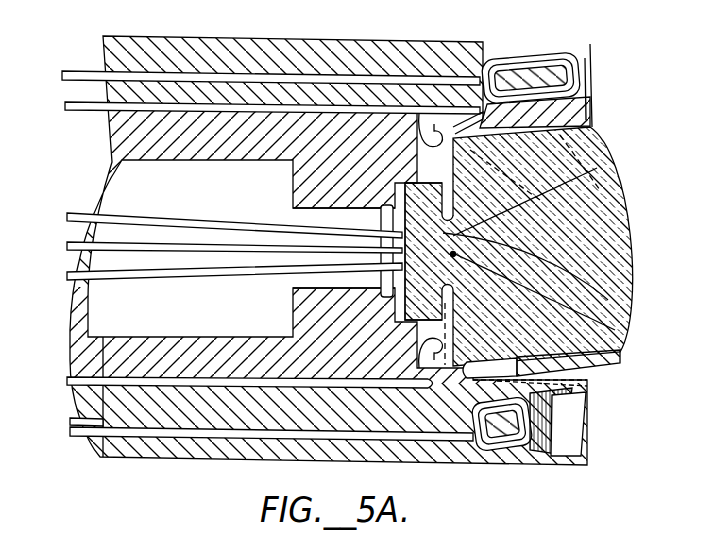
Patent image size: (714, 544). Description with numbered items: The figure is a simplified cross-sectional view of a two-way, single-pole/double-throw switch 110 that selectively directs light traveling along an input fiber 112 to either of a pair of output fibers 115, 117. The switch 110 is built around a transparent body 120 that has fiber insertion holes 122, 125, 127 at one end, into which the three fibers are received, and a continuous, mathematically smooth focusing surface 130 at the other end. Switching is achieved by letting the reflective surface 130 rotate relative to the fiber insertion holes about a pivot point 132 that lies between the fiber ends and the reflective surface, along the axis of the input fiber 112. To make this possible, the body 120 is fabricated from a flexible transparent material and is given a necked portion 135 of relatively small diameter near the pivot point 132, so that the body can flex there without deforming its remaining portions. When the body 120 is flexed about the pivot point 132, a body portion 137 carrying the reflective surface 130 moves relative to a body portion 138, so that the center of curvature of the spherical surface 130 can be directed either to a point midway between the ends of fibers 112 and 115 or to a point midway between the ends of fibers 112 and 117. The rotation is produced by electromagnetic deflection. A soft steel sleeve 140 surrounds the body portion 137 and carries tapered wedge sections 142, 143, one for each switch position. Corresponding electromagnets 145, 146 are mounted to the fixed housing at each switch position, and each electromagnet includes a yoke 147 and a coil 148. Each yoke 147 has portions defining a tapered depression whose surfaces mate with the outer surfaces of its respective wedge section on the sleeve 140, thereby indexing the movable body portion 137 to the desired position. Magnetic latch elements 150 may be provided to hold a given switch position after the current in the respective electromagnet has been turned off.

The two-way switch 110 is at (578, 23).
The input fiber 112 is at (70, 244).
The output fiber 115 is at (70, 214).
The output fiber 117 is at (72, 276).
The transparent body 120 is at (505, 186).
The fiber insertion hole 122 is at (388, 205).
The fiber insertion hole 125 is at (403, 183).
The fiber insertion hole 127 is at (383, 305).
The focusing surface 130 is at (692, 266).
The pivot point 132 is at (462, 290).
The necked portion 135 is at (607, 300).
The body portion 137 is at (560, 183).
The body portion 138 is at (418, 113).
The soft steel sleeve 140 is at (610, 353).
The tapered wedge section 142 is at (577, 108).
The tapered wedge section 143 is at (605, 376).
The electromagnet 145 is at (579, 86).
The electromagnet 146 is at (587, 445).
The yoke 147 is at (547, 423).
The coil 148 is at (567, 253).
The magnetic latch element 150 is at (447, 130).